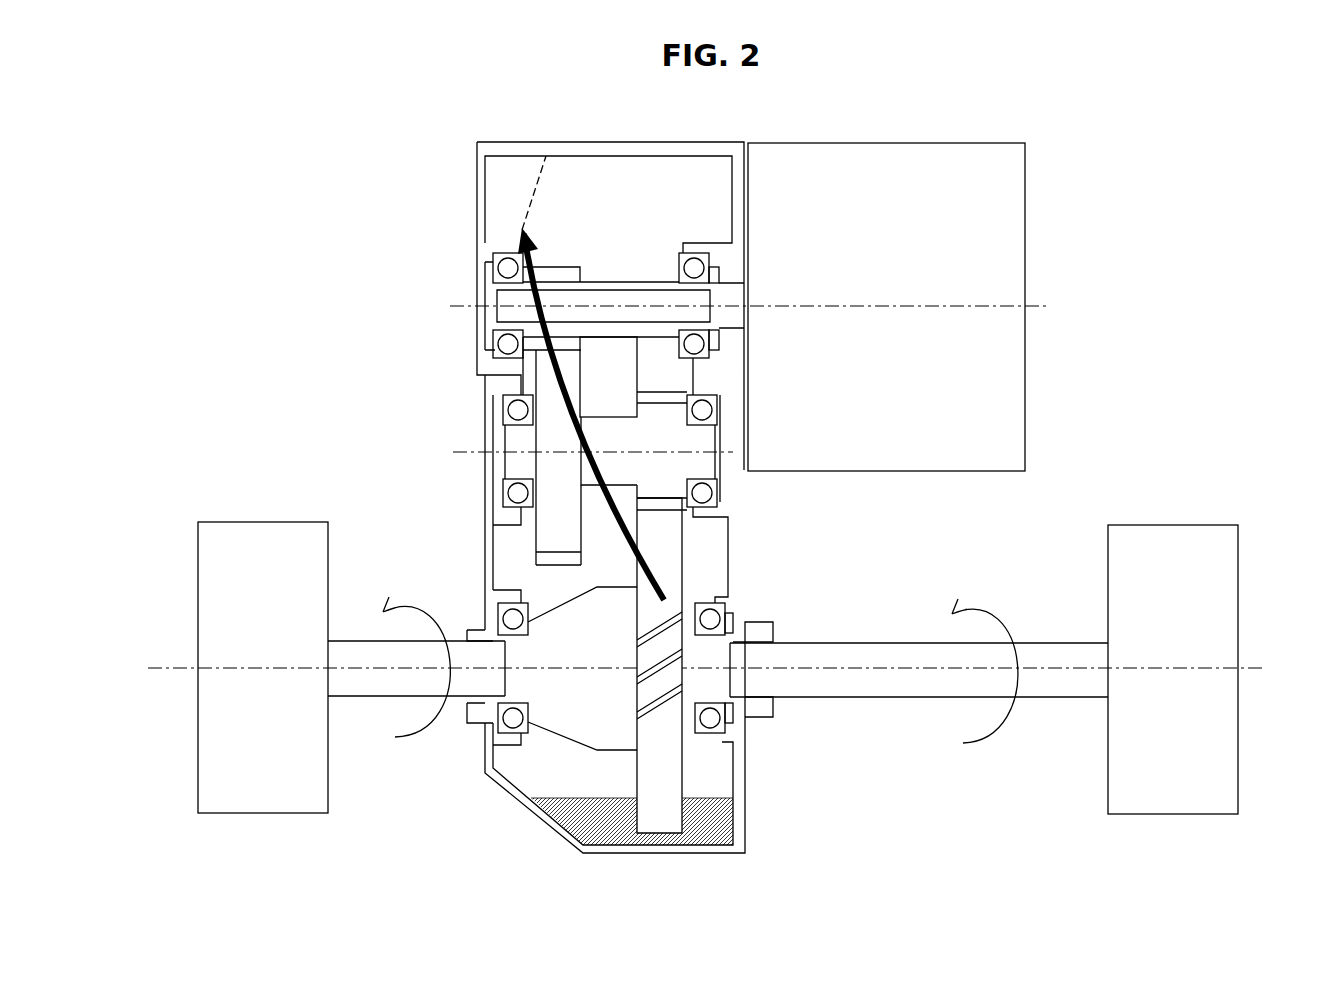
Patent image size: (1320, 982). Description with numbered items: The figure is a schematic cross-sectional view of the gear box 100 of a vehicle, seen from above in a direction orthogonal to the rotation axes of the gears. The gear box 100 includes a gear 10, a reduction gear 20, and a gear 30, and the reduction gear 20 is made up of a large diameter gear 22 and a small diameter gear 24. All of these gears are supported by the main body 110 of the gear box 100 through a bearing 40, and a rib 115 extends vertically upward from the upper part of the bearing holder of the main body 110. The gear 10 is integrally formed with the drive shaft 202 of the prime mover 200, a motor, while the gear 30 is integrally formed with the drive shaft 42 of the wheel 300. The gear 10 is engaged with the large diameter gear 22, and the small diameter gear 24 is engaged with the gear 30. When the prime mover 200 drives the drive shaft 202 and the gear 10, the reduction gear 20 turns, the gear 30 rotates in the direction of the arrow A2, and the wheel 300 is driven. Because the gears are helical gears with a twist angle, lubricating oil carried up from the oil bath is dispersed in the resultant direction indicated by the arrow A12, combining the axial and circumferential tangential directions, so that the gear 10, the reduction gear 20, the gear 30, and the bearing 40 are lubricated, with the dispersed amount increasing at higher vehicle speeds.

The gear 10 is at (560, 265).
The reduction gear 20 is at (514, 537).
The large diameter gear 22 is at (540, 558).
The small diameter gear 24 is at (635, 392).
The gear 30 is at (660, 772).
The bearing 40 is at (690, 253).
The drive shaft 42 is at (347, 655).
The gear box 100 is at (391, 425).
The main body 110 is at (617, 145).
The rib 115 is at (510, 179).
The prime mover 200 is at (1010, 235).
The drive shaft 202 is at (630, 283).
The wheel 300 is at (265, 537).
The arrow A2 is at (410, 745).
The arrow A12 is at (663, 592).